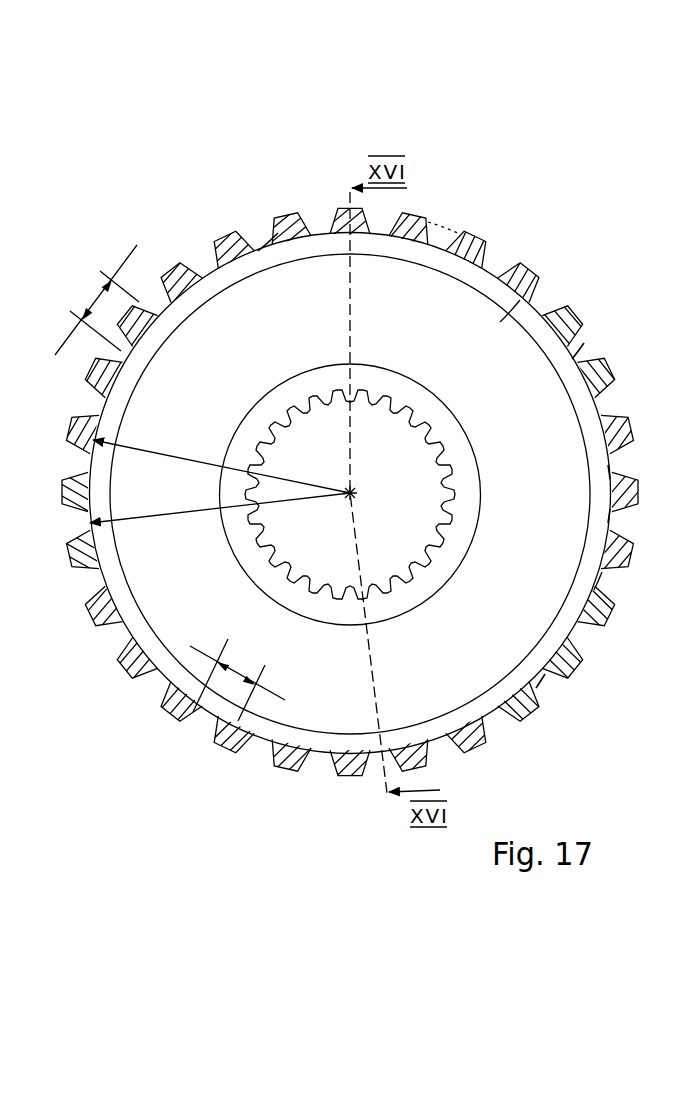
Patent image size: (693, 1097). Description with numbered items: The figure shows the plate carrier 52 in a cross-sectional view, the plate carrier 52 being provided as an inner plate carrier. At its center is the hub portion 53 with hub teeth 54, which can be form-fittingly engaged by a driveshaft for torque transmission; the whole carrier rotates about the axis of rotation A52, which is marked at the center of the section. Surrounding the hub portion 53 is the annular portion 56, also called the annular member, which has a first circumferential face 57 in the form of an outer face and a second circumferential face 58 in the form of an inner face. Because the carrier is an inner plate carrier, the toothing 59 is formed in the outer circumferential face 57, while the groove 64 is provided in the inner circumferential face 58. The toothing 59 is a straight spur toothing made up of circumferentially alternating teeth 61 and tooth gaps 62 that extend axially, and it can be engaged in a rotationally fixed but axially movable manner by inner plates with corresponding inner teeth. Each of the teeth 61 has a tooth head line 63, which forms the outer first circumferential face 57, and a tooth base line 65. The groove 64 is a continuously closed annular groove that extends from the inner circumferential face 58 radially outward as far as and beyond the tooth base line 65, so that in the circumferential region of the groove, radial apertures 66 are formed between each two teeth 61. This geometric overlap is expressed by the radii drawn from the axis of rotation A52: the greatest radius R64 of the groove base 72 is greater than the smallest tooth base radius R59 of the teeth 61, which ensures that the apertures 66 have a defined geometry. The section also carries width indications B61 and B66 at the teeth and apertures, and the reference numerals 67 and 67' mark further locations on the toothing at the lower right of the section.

The plate carrier 52 is at (300, 163).
The hub portion 53 is at (457, 553).
The hub teeth 54 is at (403, 414).
The annular portion 56 is at (262, 247).
The first circumferential face 57 is at (524, 272).
The second circumferential face 58 is at (510, 324).
The toothing 59 is at (215, 241).
The teeth 61 is at (632, 443).
The tooth gaps 62 is at (622, 470).
The tooth head line 63 is at (452, 228).
The groove 64 is at (588, 583).
The tooth base line 65 is at (578, 353).
The radial apertures 66 is at (627, 523).
The tooth flank 67 is at (568, 707).
The tooth flank 67' is at (522, 718).
The groove base 72 is at (234, 257).
The axis of rotation A52 is at (360, 500).
The greatest radius of the groove base R64 is at (221, 457).
The smallest tooth base radius R59 is at (220, 524).
The tooth width B61 is at (92, 300).
The tooth width B66 is at (237, 680).